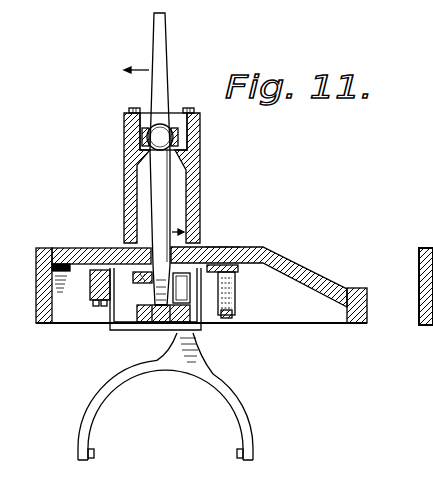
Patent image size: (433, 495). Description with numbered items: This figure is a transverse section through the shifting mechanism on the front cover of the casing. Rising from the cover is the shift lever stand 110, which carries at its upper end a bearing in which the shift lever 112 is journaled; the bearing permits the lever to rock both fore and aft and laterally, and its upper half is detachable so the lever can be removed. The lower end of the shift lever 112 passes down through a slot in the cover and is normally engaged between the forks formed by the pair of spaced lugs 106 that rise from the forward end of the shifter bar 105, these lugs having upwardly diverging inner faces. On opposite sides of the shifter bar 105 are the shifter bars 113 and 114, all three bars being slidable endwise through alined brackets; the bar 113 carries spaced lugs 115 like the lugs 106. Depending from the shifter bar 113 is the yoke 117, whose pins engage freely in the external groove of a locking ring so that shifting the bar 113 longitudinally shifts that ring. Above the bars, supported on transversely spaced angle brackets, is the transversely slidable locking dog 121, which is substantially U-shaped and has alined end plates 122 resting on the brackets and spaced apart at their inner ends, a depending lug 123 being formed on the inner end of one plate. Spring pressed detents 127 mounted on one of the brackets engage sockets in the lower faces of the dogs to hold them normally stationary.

The shift lever 112 is at (157, 42).
The shift lever stand 110 is at (201, 196).
The lugs 106 is at (196, 247).
The lugs 115 is at (218, 249).
The end plates 122 is at (79, 268).
The locking dog 121 is at (100, 323).
The shifter bar 113 is at (203, 327).
The depending lug 123 is at (133, 283).
The shifter bar 114 is at (132, 323).
The spring pressed detents 127 is at (238, 280).
The shifter bar 105 is at (165, 306).
The yoke 117 is at (246, 410).